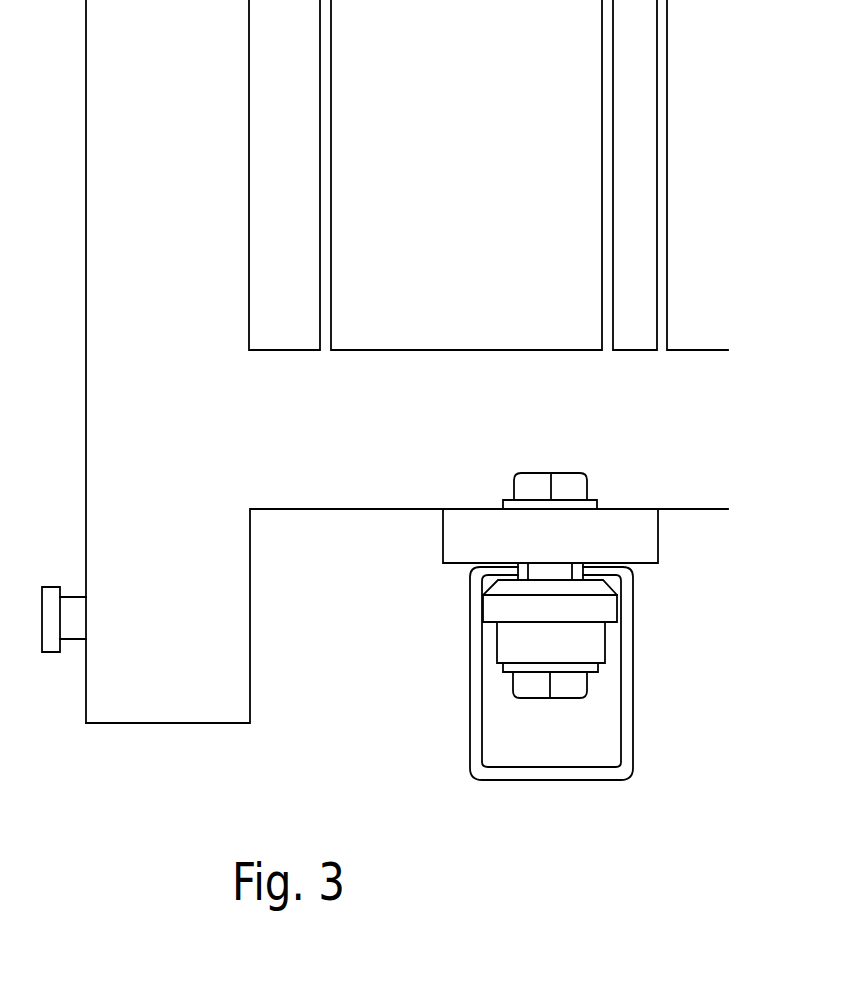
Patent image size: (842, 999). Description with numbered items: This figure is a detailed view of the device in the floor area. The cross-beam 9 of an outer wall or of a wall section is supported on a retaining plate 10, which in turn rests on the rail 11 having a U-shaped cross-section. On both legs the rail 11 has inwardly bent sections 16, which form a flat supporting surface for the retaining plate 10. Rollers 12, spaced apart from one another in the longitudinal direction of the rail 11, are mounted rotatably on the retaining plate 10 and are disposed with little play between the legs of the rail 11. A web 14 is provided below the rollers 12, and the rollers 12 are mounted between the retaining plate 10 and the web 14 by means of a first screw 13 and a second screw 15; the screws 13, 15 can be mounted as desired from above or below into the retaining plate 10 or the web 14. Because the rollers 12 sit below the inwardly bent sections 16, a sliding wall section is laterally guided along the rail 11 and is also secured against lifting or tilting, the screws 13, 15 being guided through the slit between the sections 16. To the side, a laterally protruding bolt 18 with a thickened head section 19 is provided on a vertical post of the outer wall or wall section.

The cross-beam 9 is at (357, 410).
The retaining plate 10 is at (613, 530).
The rail 11 is at (630, 688).
The rollers 12 is at (517, 597).
The first screw 13 is at (587, 482).
The web 14 is at (582, 642).
The second screw 15 is at (565, 685).
The inwardly bent sections 16 is at (505, 568).
The bolts 18 is at (75, 623).
The thickened head section 19 is at (51, 603).